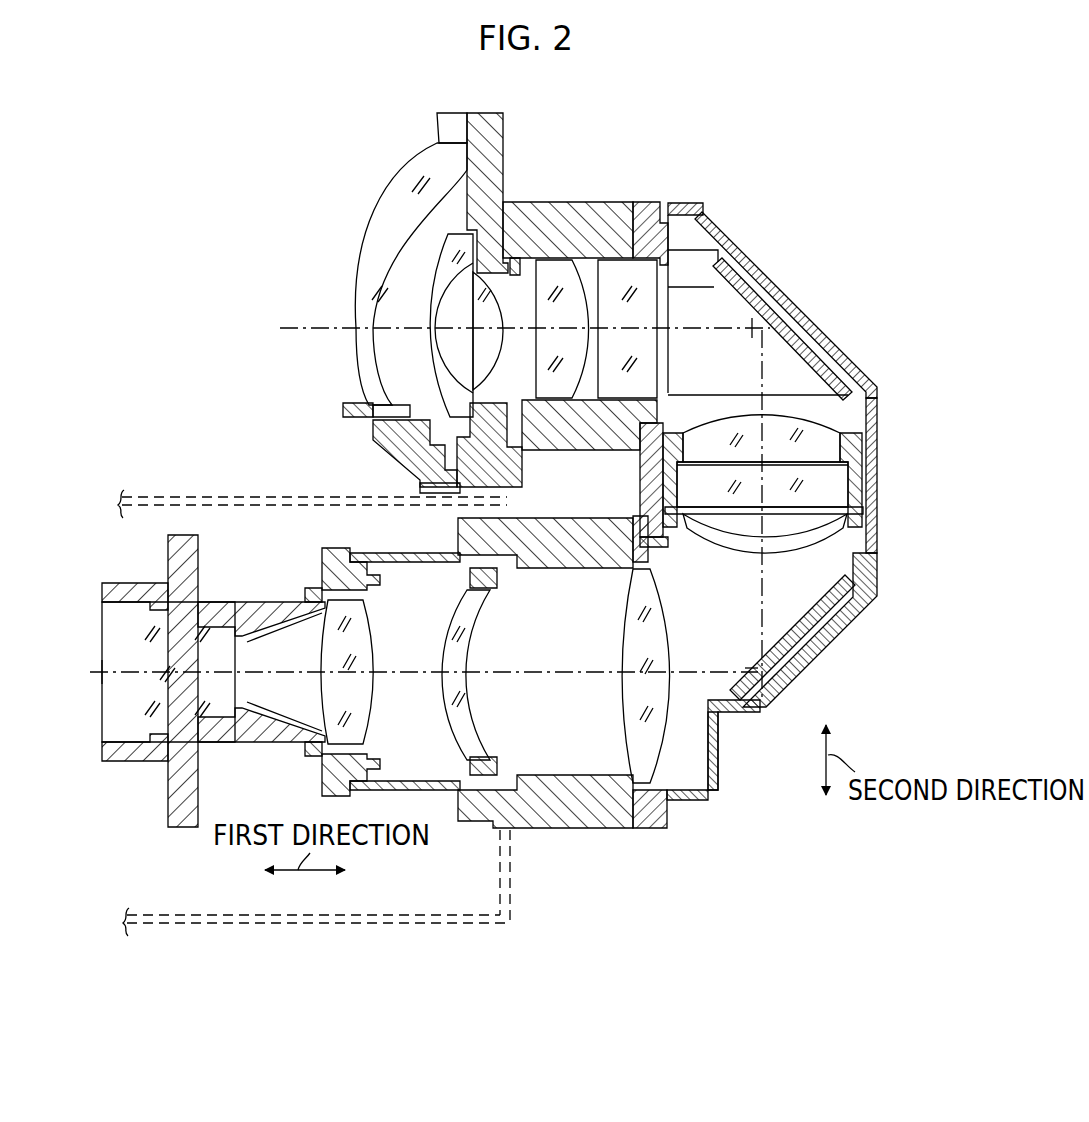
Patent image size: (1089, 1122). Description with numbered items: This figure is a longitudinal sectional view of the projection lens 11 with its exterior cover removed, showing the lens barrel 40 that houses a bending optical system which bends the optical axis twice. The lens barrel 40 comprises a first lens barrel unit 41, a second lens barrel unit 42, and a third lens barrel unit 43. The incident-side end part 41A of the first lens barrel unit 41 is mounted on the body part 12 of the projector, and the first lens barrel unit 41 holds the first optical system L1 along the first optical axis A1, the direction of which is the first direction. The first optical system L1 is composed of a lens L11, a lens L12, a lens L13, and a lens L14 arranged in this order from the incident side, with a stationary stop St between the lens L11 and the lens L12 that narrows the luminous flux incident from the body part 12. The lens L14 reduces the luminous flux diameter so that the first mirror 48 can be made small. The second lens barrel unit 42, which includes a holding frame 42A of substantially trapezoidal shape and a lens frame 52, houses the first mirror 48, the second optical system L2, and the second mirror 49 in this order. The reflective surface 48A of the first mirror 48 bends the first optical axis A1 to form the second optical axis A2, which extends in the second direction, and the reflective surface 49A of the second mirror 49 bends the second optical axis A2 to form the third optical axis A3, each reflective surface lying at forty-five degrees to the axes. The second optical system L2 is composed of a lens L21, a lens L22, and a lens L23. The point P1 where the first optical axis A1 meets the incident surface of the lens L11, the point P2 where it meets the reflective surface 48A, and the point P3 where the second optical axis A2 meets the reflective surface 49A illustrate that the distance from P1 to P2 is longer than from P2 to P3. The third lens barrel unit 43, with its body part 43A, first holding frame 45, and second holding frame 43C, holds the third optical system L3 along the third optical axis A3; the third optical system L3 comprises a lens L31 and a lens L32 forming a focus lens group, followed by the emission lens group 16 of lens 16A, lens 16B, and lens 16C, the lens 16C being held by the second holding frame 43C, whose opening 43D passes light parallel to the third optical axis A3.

The projection lens 11 is at (690, 108).
The body part 12 is at (250, 494).
The emission lens group 16 is at (369, 280).
The lens 16A is at (475, 285).
The lens 16B is at (440, 262).
The lens 16C is at (388, 196).
The lens barrel 40 is at (420, 709).
The first lens barrel unit 41 is at (540, 830).
The incident-side end part 41A is at (110, 760).
The second lens barrel unit 42 is at (724, 797).
The holding frame 42A is at (718, 735).
The third lens barrel unit 43 is at (563, 200).
The body part 43A is at (604, 208).
The second holding frame 43C is at (372, 440).
The opening 43D is at (343, 406).
The first holding frame 45 is at (493, 140).
The first mirror 48 is at (826, 622).
The reflective surface 48A is at (812, 636).
The second mirror 49 is at (800, 352).
The reflective surface 49A is at (735, 296).
The lens frame 52 is at (878, 438).
The first optical axis A1 is at (92, 671).
The second optical axis A2 is at (758, 586).
The third optical axis A3 is at (306, 326).
The first optical system L1 is at (281, 672).
The lens L11 is at (222, 690).
The lens L12 is at (365, 736).
The lens L13 is at (478, 722).
The lens L14 is at (628, 732).
The second optical system L2 is at (824, 484).
The lens L21 is at (850, 528).
The lens L22 is at (855, 487).
The lens L23 is at (855, 452).
The third optical system L3 is at (622, 377).
The lens L31 is at (655, 377).
The lens L32 is at (560, 392).
The point P1 is at (94, 674).
The point P2 is at (756, 672).
The point P3 is at (758, 340).
The stationary stop St is at (247, 638).